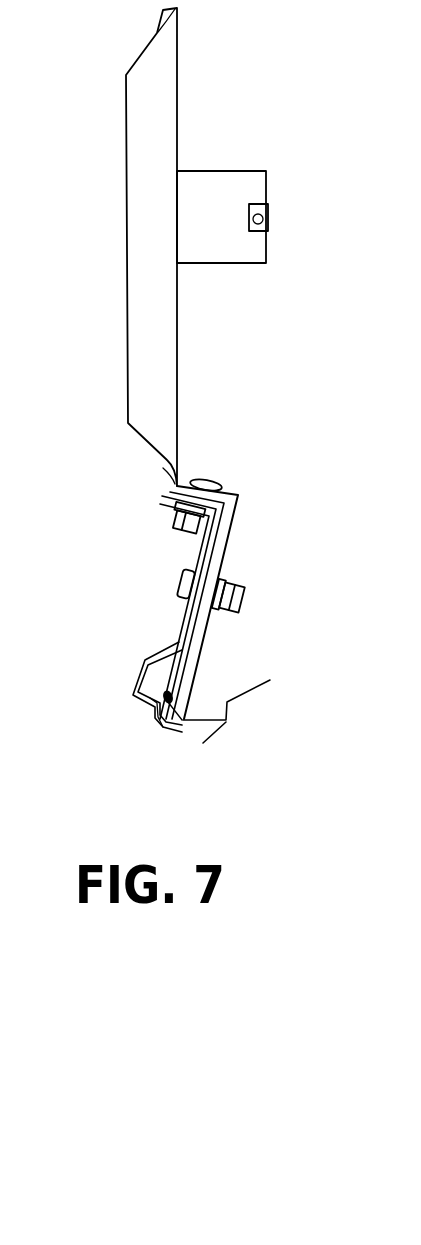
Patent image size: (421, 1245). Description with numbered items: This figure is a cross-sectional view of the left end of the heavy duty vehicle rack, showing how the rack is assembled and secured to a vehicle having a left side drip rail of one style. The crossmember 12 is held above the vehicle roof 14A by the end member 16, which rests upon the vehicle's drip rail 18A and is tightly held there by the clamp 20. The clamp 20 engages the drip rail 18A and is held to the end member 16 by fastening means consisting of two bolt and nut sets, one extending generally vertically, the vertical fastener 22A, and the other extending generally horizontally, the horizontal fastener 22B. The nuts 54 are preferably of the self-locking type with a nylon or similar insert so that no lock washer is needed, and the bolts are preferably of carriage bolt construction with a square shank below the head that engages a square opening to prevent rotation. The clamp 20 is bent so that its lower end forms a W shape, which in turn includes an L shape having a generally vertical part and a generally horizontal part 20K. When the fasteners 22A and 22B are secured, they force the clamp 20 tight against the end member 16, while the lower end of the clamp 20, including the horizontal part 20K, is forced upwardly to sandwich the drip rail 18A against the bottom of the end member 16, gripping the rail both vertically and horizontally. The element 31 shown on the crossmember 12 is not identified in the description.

The crossmember 12 is at (232, 172).
The vehicle roof 14A is at (257, 683).
The end member 16 is at (135, 130).
The drip rail 18A is at (183, 730).
The clamp 20 is at (145, 660).
The generally horizontal part of clamp 20K is at (160, 722).
The vertical fastener 22A is at (208, 477).
The horizontal fastener 22B is at (180, 578).
The screw 31 is at (266, 248).
The nut 54 is at (177, 515).